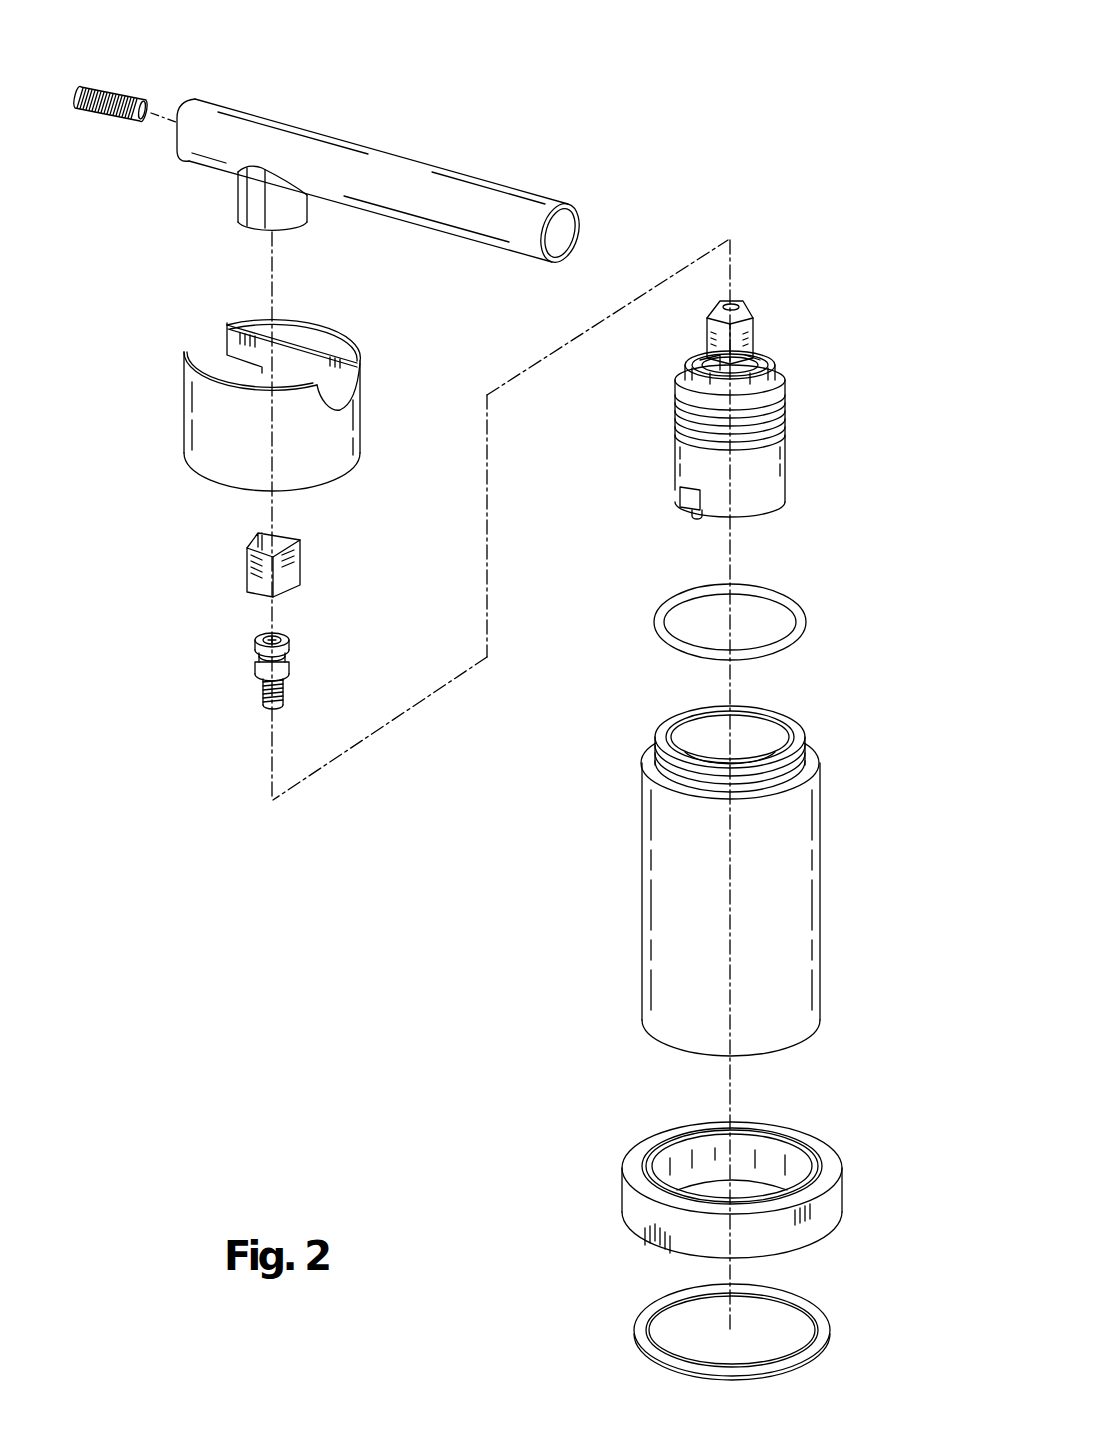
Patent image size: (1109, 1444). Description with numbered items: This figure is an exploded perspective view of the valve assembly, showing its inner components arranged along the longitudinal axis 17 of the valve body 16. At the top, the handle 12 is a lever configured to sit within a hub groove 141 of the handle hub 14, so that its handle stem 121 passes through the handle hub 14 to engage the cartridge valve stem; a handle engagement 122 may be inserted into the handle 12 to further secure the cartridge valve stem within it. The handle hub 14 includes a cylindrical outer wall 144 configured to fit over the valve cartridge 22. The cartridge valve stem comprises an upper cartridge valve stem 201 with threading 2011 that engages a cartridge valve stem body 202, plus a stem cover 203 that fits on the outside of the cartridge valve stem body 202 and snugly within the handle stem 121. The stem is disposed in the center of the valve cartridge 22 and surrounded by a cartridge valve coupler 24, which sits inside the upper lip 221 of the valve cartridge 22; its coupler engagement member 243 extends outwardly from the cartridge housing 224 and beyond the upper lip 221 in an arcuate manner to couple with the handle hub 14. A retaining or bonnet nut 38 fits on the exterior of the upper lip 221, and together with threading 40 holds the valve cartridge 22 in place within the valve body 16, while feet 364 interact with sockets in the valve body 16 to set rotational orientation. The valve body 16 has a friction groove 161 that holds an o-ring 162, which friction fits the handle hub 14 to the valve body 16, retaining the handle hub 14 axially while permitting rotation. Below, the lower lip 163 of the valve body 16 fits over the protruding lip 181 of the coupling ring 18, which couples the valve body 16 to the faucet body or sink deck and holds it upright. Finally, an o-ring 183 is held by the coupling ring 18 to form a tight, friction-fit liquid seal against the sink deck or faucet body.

The handle 12 is at (338, 135).
The handle stem 121 is at (233, 200).
The handle engagement 122 is at (118, 90).
The handle hub 14 is at (290, 392).
The hub groove 141 is at (205, 342).
The cylindrical outer wall 144 is at (205, 417).
The stem cover 203 is at (235, 568).
The upper cartridge valve stem 201 is at (285, 679).
The threading 2011 is at (263, 693).
The cartridge valve stem body 202 is at (743, 409).
The valve cartridge 22 is at (716, 409).
The upper lip 221 is at (673, 360).
The cartridge housing 224 is at (760, 490).
The coupler engagement member 243 is at (762, 363).
The cartridge valve coupler 24 is at (773, 357).
The retaining nut 38 is at (777, 390).
The threading 40 is at (785, 422).
The feet 364 is at (642, 547).
The o-ring 162 is at (815, 622).
The valve body 16 is at (732, 883).
The friction groove 161 is at (772, 778).
The lower lip 163 is at (795, 1043).
The longitudinal axis 17 is at (730, 1087).
The coupling ring 18 is at (804, 1181).
The protruding lip 181 is at (853, 1220).
The o-ring 183 is at (627, 1325).